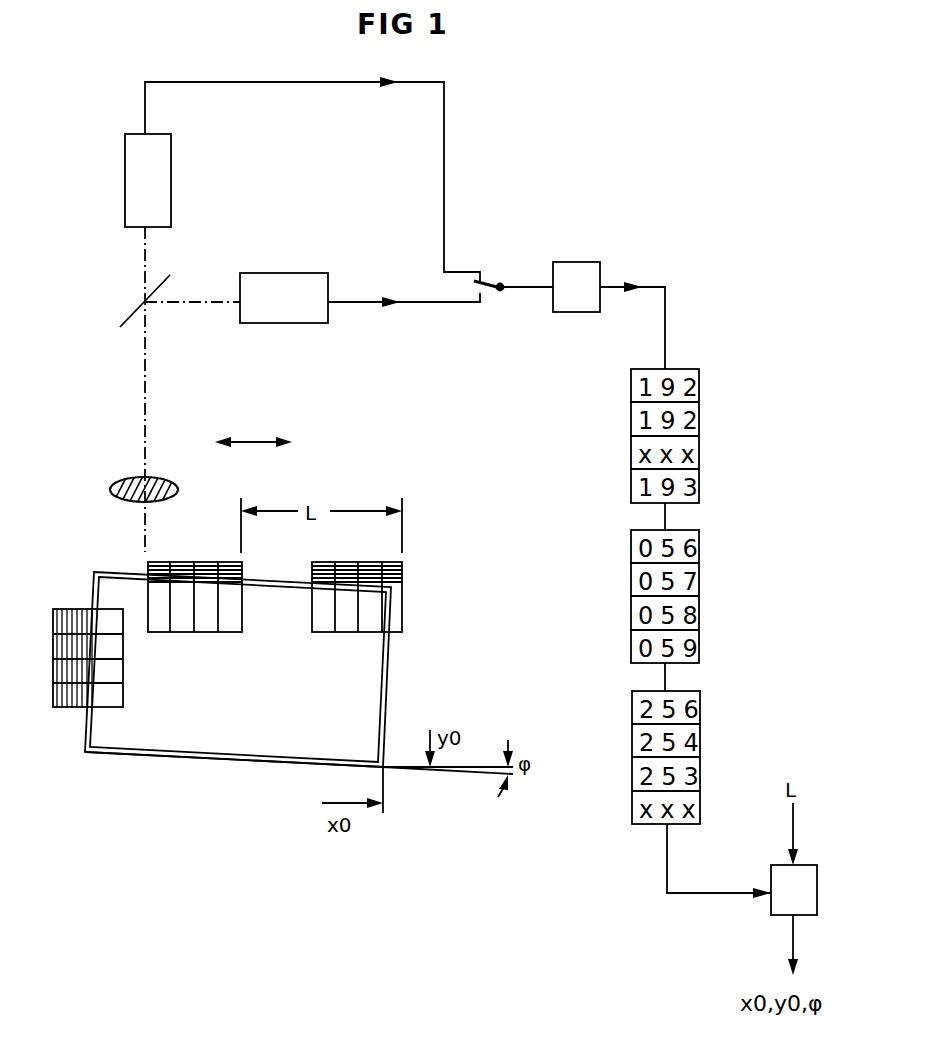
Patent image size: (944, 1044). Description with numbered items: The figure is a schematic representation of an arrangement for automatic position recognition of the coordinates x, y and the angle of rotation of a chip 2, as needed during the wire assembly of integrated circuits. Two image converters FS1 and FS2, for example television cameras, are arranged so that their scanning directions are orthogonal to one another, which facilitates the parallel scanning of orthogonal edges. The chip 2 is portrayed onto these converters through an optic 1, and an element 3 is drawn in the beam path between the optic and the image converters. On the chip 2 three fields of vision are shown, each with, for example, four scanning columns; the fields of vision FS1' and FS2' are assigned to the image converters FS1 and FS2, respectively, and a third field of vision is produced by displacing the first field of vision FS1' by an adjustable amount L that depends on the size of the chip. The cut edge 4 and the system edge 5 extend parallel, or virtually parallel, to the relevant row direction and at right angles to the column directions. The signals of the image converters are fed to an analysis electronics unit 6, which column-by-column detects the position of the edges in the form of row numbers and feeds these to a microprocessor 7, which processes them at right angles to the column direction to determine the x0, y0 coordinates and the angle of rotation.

The optic 1 is at (120, 483).
The chip 2 is at (347, 697).
The semi-transparent mirror 3 is at (125, 320).
The cut edge 4 is at (387, 663).
The system edge 5 is at (152, 752).
The analysis electronics unit 6 is at (578, 276).
The microprocessor 7 is at (782, 878).
The first image converter FS1 is at (121, 180).
The second image converter FS2 is at (284, 284).
The first field of vision FS1' is at (275, 582).
The second field of vision FS2' is at (86, 640).